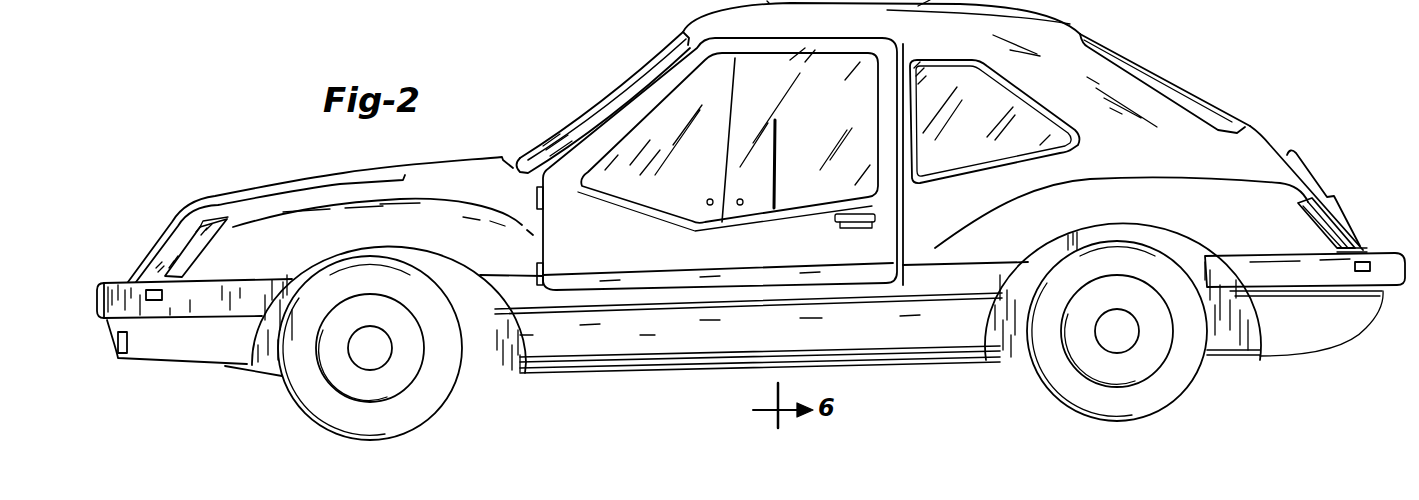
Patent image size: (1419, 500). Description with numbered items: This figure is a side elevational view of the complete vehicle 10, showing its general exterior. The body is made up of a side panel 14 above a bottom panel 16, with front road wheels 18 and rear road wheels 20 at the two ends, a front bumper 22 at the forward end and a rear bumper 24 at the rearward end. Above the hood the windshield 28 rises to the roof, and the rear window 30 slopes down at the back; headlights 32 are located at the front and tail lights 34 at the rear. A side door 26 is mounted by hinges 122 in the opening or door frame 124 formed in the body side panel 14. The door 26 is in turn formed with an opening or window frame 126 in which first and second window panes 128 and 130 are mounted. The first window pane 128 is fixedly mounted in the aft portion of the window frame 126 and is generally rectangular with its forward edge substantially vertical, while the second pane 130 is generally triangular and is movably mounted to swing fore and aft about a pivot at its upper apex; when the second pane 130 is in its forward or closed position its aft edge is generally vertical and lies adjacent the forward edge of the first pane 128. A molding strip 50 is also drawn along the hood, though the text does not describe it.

The vehicle 10 is at (1243, 43).
The side panel 14 is at (958, 213).
The bottom panel 16 is at (880, 366).
The front road wheels 18 is at (441, 402).
The rear road wheels 20 is at (1194, 381).
The front bumper 22 is at (107, 323).
The rear bumper 24 is at (1408, 255).
The side door 26 is at (647, 292).
The windshield 28 is at (580, 112).
The rear window 30 is at (1162, 78).
The headlights 32 is at (192, 244).
The tail lights 34 is at (1322, 215).
The hood molding 50 is at (341, 150).
The hinges 122 is at (558, 205).
The door frame 124 is at (898, 45).
The window frame 126 is at (870, 123).
The first window pane 128 is at (843, 109).
The second window pane 130 is at (699, 198).